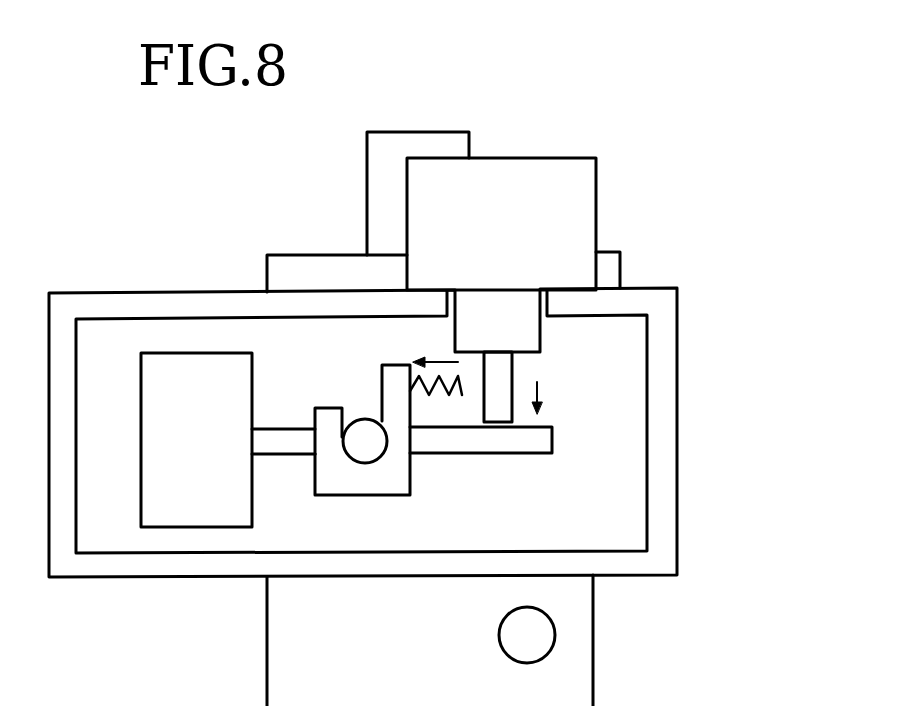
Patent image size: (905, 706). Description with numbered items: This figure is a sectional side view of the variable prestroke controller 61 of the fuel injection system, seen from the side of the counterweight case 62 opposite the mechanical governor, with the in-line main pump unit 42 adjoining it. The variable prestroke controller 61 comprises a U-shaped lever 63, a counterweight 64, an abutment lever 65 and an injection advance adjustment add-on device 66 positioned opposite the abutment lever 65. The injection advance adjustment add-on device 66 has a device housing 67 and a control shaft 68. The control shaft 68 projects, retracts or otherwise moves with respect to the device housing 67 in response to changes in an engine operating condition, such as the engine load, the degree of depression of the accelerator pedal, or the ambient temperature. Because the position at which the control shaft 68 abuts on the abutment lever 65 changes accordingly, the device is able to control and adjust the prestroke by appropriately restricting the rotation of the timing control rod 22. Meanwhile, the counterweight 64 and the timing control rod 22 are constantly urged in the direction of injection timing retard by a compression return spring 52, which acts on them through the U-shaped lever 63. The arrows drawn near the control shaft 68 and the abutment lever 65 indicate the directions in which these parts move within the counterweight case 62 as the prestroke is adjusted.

The timing control rod 22 is at (361, 450).
The in-line main pump unit 42 is at (312, 255).
The compression return spring 52 is at (443, 393).
The variable prestroke controller 61 is at (665, 152).
The counterweight case 62 is at (670, 413).
The U-shaped lever 63 is at (330, 470).
The counterweight 64 is at (163, 502).
The abutment lever 65 is at (464, 443).
The injection advance adjustment add-on device 66 is at (582, 143).
The device housing 67 is at (596, 212).
The control shaft 68 is at (498, 408).